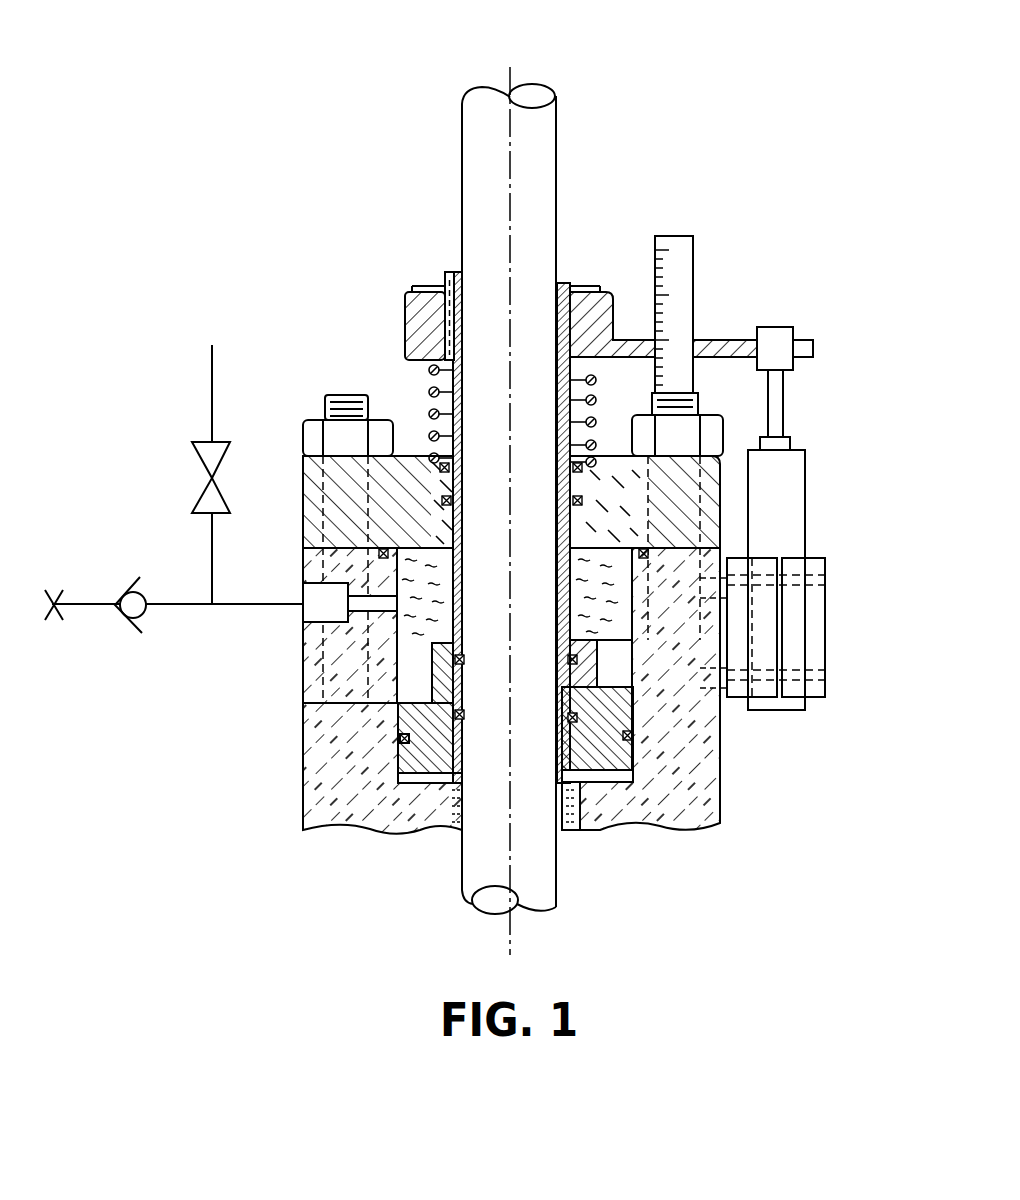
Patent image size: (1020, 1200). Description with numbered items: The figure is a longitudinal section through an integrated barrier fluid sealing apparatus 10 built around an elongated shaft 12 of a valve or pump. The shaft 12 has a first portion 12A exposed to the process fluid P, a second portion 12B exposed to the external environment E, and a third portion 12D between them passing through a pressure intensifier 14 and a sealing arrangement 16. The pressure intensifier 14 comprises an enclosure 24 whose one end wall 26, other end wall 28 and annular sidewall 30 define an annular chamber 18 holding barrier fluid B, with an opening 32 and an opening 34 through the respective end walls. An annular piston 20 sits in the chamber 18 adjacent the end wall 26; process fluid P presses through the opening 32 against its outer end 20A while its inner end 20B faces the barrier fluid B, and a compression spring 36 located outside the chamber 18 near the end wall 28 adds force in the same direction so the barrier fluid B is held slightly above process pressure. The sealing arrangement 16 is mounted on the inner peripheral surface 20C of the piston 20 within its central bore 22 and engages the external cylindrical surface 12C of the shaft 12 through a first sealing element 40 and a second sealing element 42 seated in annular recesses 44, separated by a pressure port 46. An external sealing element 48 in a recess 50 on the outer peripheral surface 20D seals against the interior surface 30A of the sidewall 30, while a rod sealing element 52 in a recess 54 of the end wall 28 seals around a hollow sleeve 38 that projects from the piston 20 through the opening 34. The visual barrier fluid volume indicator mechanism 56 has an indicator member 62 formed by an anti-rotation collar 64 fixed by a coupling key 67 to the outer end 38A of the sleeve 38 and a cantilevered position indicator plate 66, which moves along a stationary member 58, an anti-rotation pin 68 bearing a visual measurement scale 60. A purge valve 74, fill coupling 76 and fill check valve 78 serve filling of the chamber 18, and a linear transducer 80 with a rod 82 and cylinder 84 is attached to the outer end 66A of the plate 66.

The integrated barrier fluid sealing apparatus 10 is at (477, 485).
The shaft 12 is at (458, 133).
The first portion of the shaft 12A is at (472, 868).
The second portion of the shaft 12B is at (540, 187).
The external cylindrical surface of the shaft 12C is at (538, 508).
The third portion of the shaft 12D is at (478, 603).
The pressure intensifier 14 is at (300, 498).
The sealing arrangement 16 is at (547, 652).
The annular chamber 18 is at (412, 585).
The annular piston 20 is at (358, 840).
The outer end of the piston 20A is at (416, 838).
The inner end of the piston 20B is at (350, 638).
The inner peripheral surface of the piston 20C is at (468, 750).
The outer peripheral surface of the piston 20D is at (345, 760).
The central bore 22 is at (577, 785).
The enclosure 24 is at (724, 756).
The one end wall 26 is at (660, 822).
The other end wall 28 is at (440, 462).
The annular sidewall 30 is at (355, 612).
The interior surface of the annular sidewall 30A is at (600, 682).
The one opening 32 is at (453, 845).
The other opening 34 is at (470, 483).
The spring 36 is at (428, 400).
The hollow sleeve 38 is at (572, 420).
The outer end of the sleeve 38A is at (450, 292).
The first sealing element 40 is at (585, 760).
The second sealing element 42 is at (580, 667).
The annular recesses 44 is at (458, 722).
The pressure port 46 is at (610, 700).
The external sealing element 48 is at (396, 740).
The annular recess 50 is at (400, 760).
The rod sealing element 52 is at (583, 503).
The annular recess 54 is at (450, 496).
The visual barrier fluid volume indicator mechanism 56 is at (788, 278).
The stationary member 58 is at (673, 238).
The visual measurement scale 60 is at (690, 287).
The indicator member 62 is at (718, 340).
The anti-rotation collar 64 is at (596, 300).
The position indicator plate 66 is at (637, 338).
The outer end of the position indicator plate 66A is at (815, 350).
The coupling key 67 is at (445, 328).
The anti-rotation pin 68 is at (696, 382).
The purge valve 74 is at (200, 470).
The fill coupling 76 is at (50, 618).
The fill check valve 78 is at (127, 590).
The linear transducer 80 is at (782, 470).
The rod 82 is at (784, 407).
The cylinder 84 is at (800, 525).
The barrier fluid B is at (590, 572).
The process fluid P is at (572, 828).
The external environment E is at (515, 43).